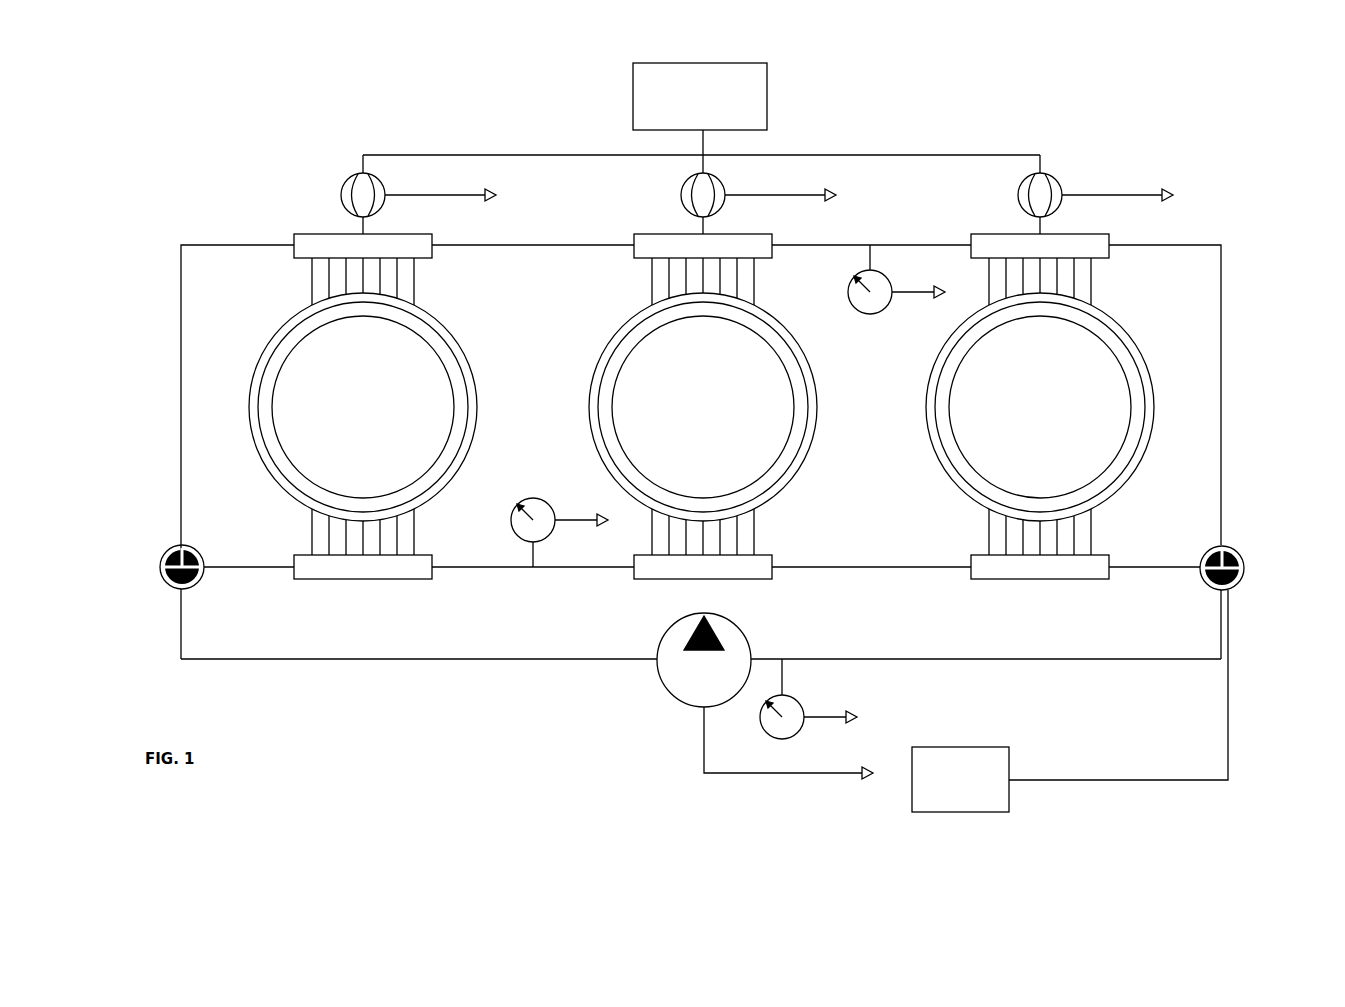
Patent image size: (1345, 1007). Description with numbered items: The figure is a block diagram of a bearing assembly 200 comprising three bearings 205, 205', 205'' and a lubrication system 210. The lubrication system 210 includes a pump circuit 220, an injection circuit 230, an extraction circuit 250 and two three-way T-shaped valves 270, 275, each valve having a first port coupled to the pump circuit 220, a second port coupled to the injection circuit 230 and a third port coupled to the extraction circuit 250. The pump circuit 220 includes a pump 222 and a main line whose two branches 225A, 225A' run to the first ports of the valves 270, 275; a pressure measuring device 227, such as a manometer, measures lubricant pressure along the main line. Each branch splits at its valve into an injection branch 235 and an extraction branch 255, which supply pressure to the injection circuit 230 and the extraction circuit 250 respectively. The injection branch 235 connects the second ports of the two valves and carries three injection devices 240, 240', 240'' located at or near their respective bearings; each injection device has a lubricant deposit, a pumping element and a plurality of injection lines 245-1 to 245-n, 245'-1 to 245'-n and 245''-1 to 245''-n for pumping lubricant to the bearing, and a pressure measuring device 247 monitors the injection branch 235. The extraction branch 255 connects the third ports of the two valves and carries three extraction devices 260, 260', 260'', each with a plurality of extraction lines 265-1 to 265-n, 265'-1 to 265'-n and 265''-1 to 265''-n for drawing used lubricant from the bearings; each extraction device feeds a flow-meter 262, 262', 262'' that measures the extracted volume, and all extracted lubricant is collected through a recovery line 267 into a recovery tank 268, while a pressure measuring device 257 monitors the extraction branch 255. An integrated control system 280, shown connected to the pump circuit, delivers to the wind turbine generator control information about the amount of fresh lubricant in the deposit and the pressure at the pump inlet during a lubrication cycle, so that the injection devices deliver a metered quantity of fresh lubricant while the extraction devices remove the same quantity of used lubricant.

The bearing assembly 200 is at (1131, 91).
The bearing 205 is at (363, 407).
The bearing 205' is at (703, 407).
The bearing 205'' is at (1040, 407).
The lubrication system 210 is at (345, 790).
The pump circuit 220 is at (615, 704).
The pump 222 is at (668, 690).
The branch of main line 225A is at (419, 662).
The branch of main line 225A' is at (986, 697).
The pressure measuring device 227 is at (799, 703).
The injection circuit 230 is at (445, 601).
The injection branch 235 is at (242, 565).
The injection device 240 is at (363, 593).
The injection device 240' is at (689, 592).
The injection device 240'' is at (1023, 592).
The injection line 245-1 is at (312, 532).
The injection line 245-n is at (414, 538).
The injection line 245'-1 is at (616, 525).
The injection line 245'-n is at (786, 528).
The injection line 245''-1 is at (951, 528).
The injection line 245''-n is at (1125, 529).
The pressure measuring device 247 is at (523, 498).
The extraction circuit 250 is at (240, 226).
The extraction branch 255 is at (181, 340).
The pressure measuring device 257 is at (878, 313).
The extraction device 260 is at (346, 214).
The extraction device 260' is at (674, 213).
The extraction device 260'' is at (1019, 213).
The flow-meter 262 is at (391, 176).
The flow-meter 262' is at (758, 195).
The flow-meter 262'' is at (1095, 179).
The extraction line 265-1 is at (312, 290).
The extraction line 265-n is at (414, 294).
The extraction line 265'-1 is at (615, 281).
The extraction line 265'-n is at (786, 281).
The extraction line 265''-1 is at (951, 281).
The extraction line 265''-n is at (1125, 281).
The recovery line 267 is at (858, 155).
The recovery tank 268 is at (767, 90).
The 3-way T-shaped valve 270 is at (158, 588).
The 3-way T-shaped valve 275 is at (1240, 590).
The integrated control system 280 is at (946, 785).